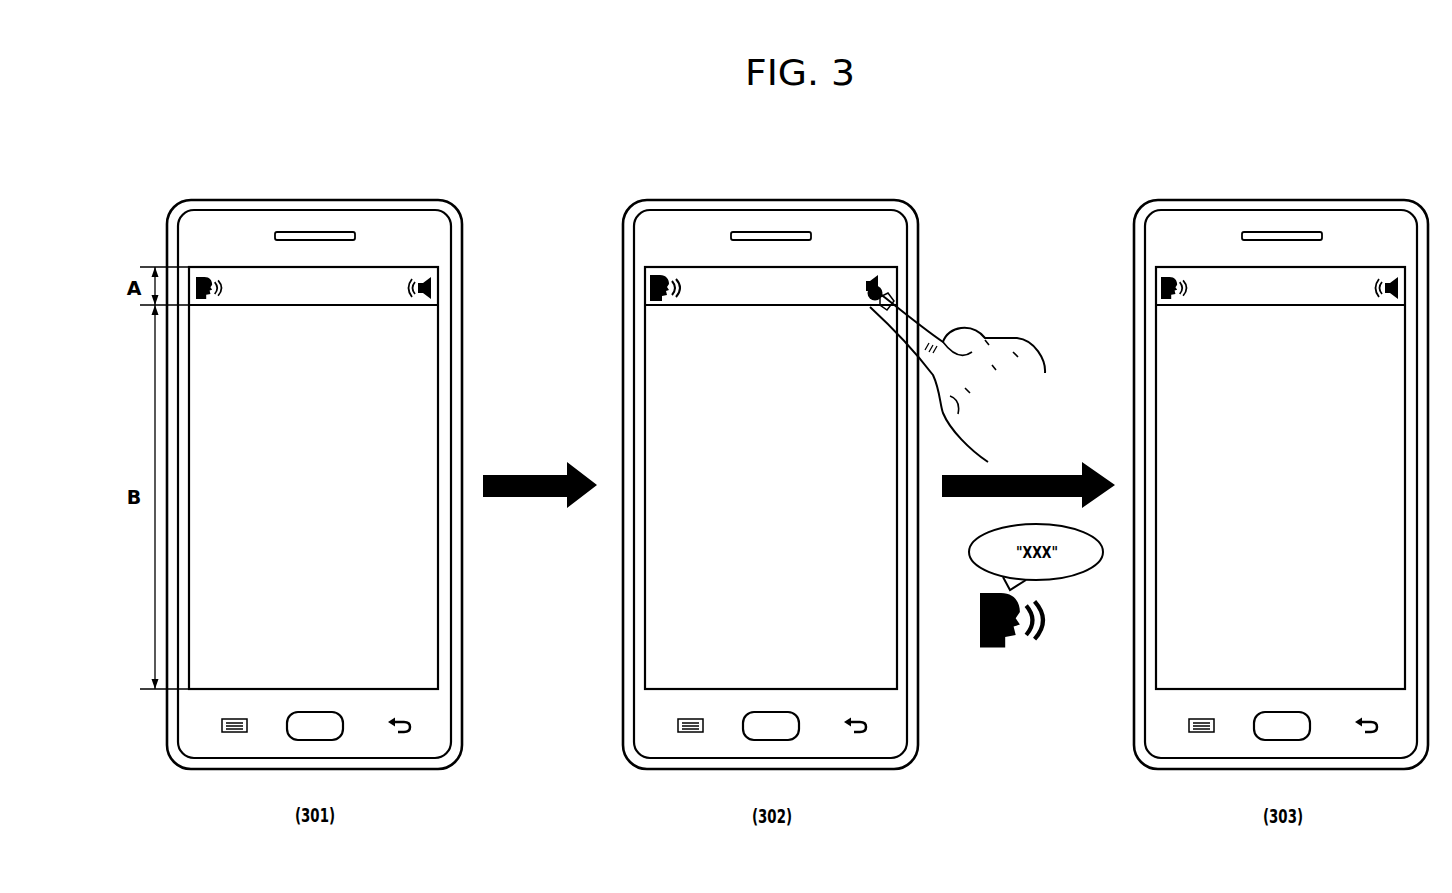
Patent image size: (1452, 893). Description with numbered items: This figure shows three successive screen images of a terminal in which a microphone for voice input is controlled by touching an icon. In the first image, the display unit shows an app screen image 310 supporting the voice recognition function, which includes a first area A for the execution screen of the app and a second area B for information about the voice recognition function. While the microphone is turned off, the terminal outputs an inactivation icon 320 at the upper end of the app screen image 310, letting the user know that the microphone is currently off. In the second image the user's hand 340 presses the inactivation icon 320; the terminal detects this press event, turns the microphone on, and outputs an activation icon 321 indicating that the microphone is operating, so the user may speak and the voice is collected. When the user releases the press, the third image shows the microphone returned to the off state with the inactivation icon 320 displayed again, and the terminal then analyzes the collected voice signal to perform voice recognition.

The app screen image 310 is at (387, 268).
The inactivation icon 320 is at (433, 280).
The activation icon 321 is at (653, 278).
The user finger touch input 340 is at (963, 325).